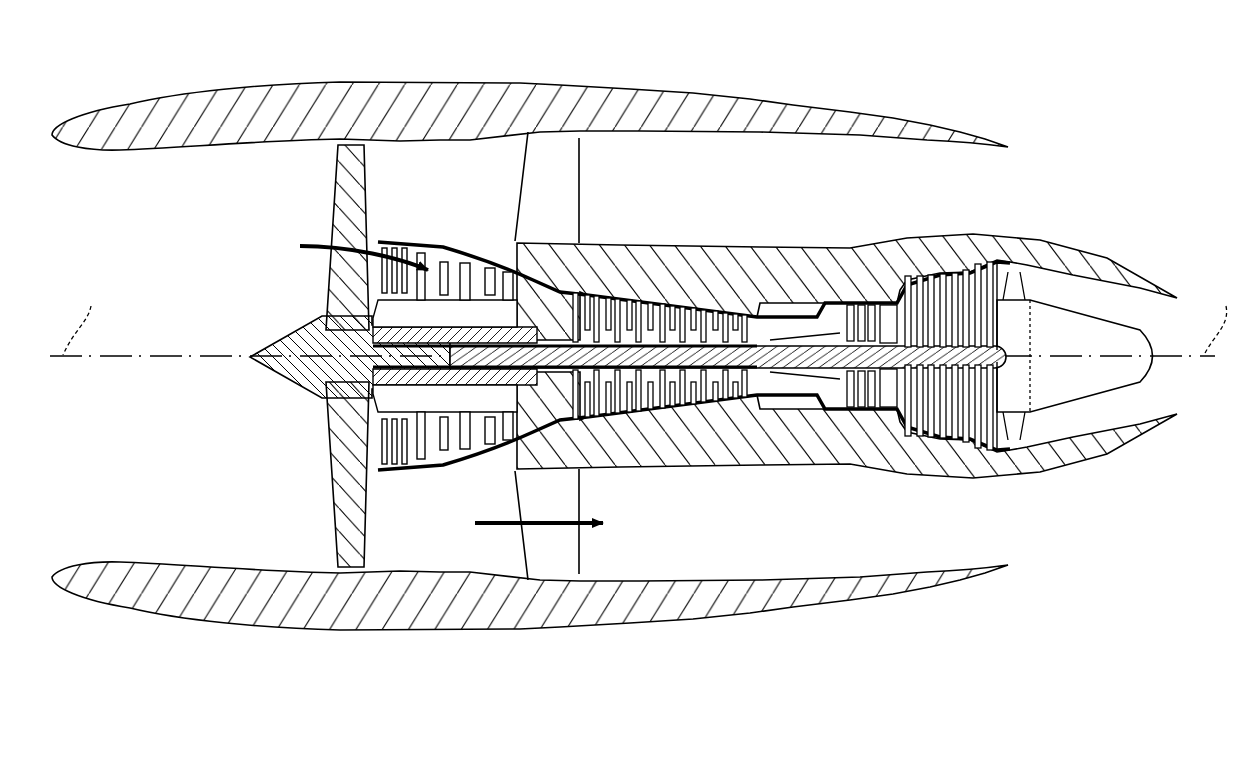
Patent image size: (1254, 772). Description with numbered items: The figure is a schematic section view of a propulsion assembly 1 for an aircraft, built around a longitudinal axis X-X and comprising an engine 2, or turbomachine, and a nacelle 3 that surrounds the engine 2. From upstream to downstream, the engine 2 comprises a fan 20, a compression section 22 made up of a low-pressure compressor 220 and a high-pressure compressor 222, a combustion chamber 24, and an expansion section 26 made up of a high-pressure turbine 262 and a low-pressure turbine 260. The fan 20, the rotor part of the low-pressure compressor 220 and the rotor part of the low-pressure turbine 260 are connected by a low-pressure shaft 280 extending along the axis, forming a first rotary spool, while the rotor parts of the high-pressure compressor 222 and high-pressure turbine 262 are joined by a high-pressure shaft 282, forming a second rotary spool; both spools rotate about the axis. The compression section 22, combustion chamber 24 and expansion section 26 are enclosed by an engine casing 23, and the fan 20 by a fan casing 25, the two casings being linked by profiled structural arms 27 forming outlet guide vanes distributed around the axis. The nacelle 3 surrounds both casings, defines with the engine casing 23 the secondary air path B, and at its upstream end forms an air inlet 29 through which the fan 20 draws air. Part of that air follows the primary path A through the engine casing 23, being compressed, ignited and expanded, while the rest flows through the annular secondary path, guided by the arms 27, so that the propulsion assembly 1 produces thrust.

The propulsion assembly 1 is at (879, 53).
The engine 2 is at (1000, 496).
The nacelle 3 is at (211, 629).
The fan 20 is at (247, 267).
The compression section 22 is at (560, 271).
The engine casing 23 is at (722, 278).
The combustion chamber 24 is at (792, 388).
The fan casing 25 is at (352, 584).
The expansion section 26 is at (912, 263).
The profiled structural arms 27 is at (597, 219).
The air inlet 29 is at (177, 387).
The low-pressure compressor 220 is at (462, 250).
The high-pressure compressor 222 is at (682, 400).
The low-pressure turbine 260 is at (950, 392).
The high-pressure turbine 262 is at (877, 394).
The low-pressure shaft 280 is at (725, 363).
The high-pressure shaft 282 is at (776, 335).